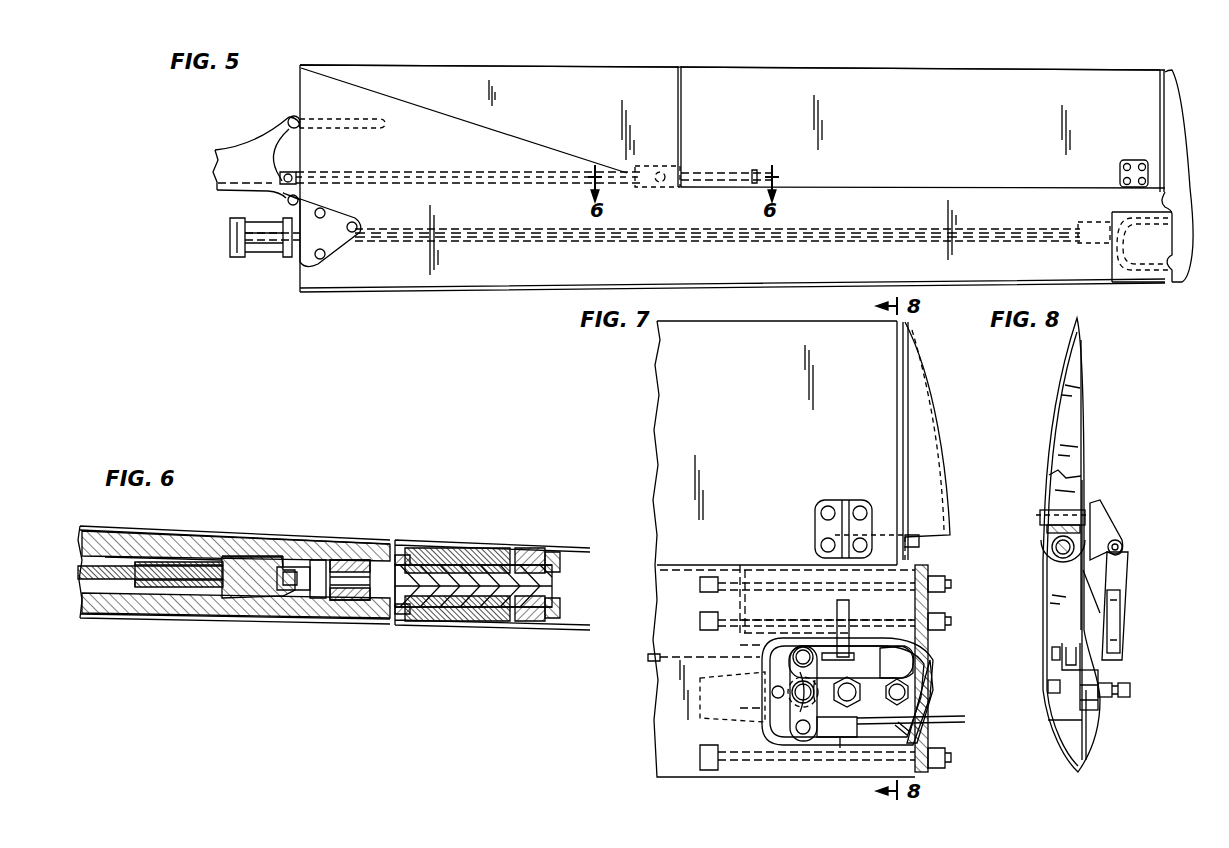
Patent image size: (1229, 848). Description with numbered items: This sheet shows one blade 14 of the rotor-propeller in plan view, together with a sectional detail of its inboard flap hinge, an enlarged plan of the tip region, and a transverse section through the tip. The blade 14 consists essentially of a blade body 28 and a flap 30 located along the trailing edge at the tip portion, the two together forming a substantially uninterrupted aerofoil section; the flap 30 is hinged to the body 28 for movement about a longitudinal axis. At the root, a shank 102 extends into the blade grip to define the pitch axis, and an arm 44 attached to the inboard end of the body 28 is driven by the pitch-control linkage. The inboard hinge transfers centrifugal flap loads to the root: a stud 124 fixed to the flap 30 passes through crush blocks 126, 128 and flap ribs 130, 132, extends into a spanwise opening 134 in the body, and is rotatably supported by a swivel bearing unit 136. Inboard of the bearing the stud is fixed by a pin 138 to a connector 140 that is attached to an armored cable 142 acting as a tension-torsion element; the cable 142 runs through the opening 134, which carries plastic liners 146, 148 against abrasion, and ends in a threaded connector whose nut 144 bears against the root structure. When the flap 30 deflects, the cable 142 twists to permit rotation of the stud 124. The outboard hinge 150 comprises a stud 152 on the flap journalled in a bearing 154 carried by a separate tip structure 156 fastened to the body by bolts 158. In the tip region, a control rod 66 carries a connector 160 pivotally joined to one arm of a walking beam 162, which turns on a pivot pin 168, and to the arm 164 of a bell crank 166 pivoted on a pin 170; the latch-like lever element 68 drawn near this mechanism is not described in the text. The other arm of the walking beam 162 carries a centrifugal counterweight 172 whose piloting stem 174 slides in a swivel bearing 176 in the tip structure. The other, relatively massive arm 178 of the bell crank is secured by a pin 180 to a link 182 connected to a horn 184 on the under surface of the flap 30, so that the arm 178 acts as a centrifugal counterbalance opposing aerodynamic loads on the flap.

In FIG. 5, the blade 14 is at (705, 58).
In FIG. 5, the blade body 28 is at (584, 66).
In FIG. 6, the blade body 28 is at (290, 536).
In FIG. 7, the blade body 28 is at (662, 755).
In FIG. 8, the blade body 28 is at (1043, 623).
In FIG. 5, the flap 30 is at (1054, 69).
In FIG. 6, the flap 30 is at (566, 548).
In FIG. 7, the flap 30 is at (722, 322).
In FIG. 8, the flap 30 is at (1044, 421).
In FIG. 5, the arm 44 is at (244, 138).
In FIG. 7, the control rod 66 is at (650, 662).
In FIG. 7, the latch lever 68 is at (931, 672).
In FIG. 8, the latch lever 68 is at (1074, 717).
In FIG. 5, the shank 102 is at (270, 257).
In FIG. 6, the stud 124 is at (553, 581).
In FIG. 6, the crush block 126 is at (492, 550).
In FIG. 6, the crush block 128 is at (528, 550).
In FIG. 6, the flap rib 130 is at (415, 614).
In FIG. 6, the flap rib 132 is at (535, 620).
In FIG. 5, the longitudinal opening 134 is at (470, 172).
In FIG. 6, the longitudinal opening 134 is at (235, 557).
In FIG. 6, the swivel bearing unit 136 is at (370, 600).
In FIG. 6, the pin 138 is at (318, 600).
In FIG. 6, the connector 140 is at (300, 568).
In FIG. 5, the armored cable 142 is at (406, 172).
In FIG. 6, the armored cable 142 is at (122, 567).
In FIG. 5, the nut 144 is at (296, 176).
In FIG. 6, the plastic liner 146 is at (182, 560).
In FIG. 6, the plastic liner 148 is at (250, 556).
In FIG. 5, the outboard flap hinge 150 is at (1170, 173).
In FIG. 7, the outboard flap hinge 150 is at (928, 555).
In FIG. 7, the stud 152 is at (900, 540).
In FIG. 8, the stud 152 is at (1043, 556).
In FIG. 7, the bearing 154 is at (920, 540).
In FIG. 7, the tip structure 156 is at (930, 600).
In FIG. 7, the bolts 158 is at (948, 584).
In FIG. 7, the connector 160 is at (935, 640).
In FIG. 7, the walking beam 162 is at (798, 723).
In FIG. 7, the arm 164 is at (915, 659).
In FIG. 7, the bell crank 166 is at (932, 690).
In FIG. 8, the bell crank 166 is at (1100, 700).
In FIG. 7, the pivot pin 168 is at (797, 664).
In FIG. 7, the pivot pin 170 is at (925, 701).
In FIG. 7, the centrifugal counterweight 172 is at (840, 748).
In FIG. 7, the piloting stem 174 is at (946, 719).
In FIG. 7, the swivel bearing 176 is at (900, 735).
In FIG. 7, the arm 178 is at (856, 689).
In FIG. 7, the pin 180 is at (851, 707).
In FIG. 8, the pin 180 is at (1130, 690).
In FIG. 7, the link 182 is at (848, 634).
In FIG. 8, the link 182 is at (1123, 620).
In FIG. 8, the horn 184 is at (1115, 530).